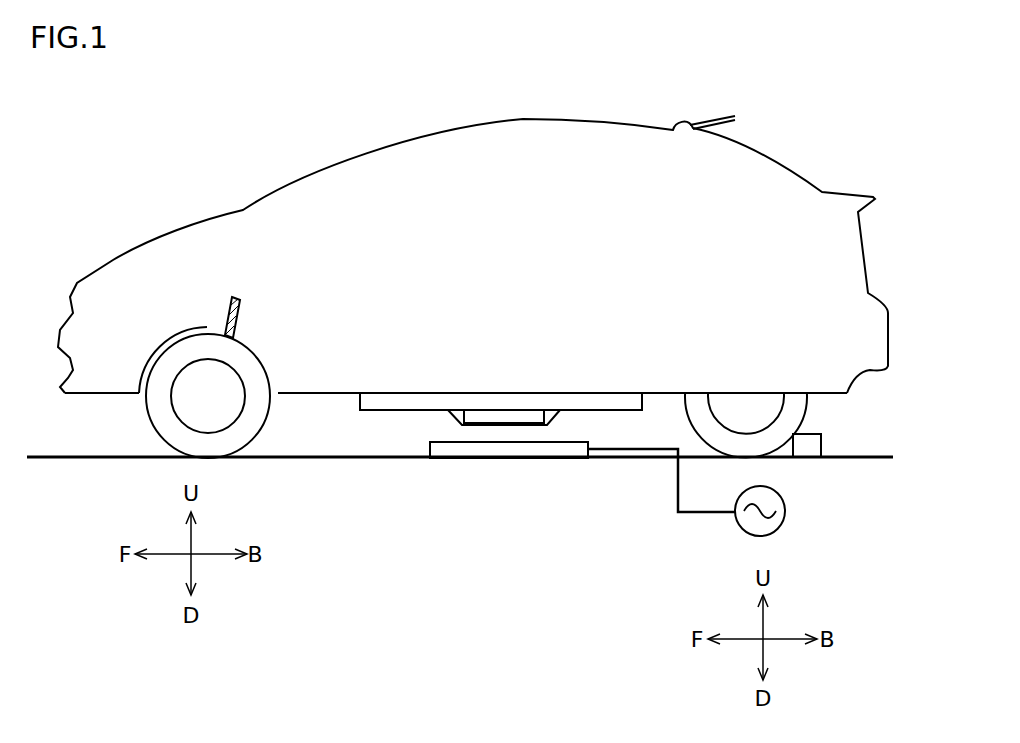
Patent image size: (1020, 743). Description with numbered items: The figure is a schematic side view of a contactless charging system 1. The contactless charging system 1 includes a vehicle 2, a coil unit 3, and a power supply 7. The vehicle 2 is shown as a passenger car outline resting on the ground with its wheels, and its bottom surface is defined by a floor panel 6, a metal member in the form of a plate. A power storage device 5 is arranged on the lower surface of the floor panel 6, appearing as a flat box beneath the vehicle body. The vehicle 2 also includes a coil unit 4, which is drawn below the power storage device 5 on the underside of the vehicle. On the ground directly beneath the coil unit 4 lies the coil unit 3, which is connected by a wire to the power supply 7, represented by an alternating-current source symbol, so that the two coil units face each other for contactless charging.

The contactless charging system 1 is at (271, 140).
The vehicle 2 is at (518, 120).
The coil unit 3 is at (489, 452).
The coil unit 4 is at (525, 418).
The power storage device 5 is at (598, 400).
The floor panel 6 is at (313, 394).
The power supply 7 is at (786, 509).